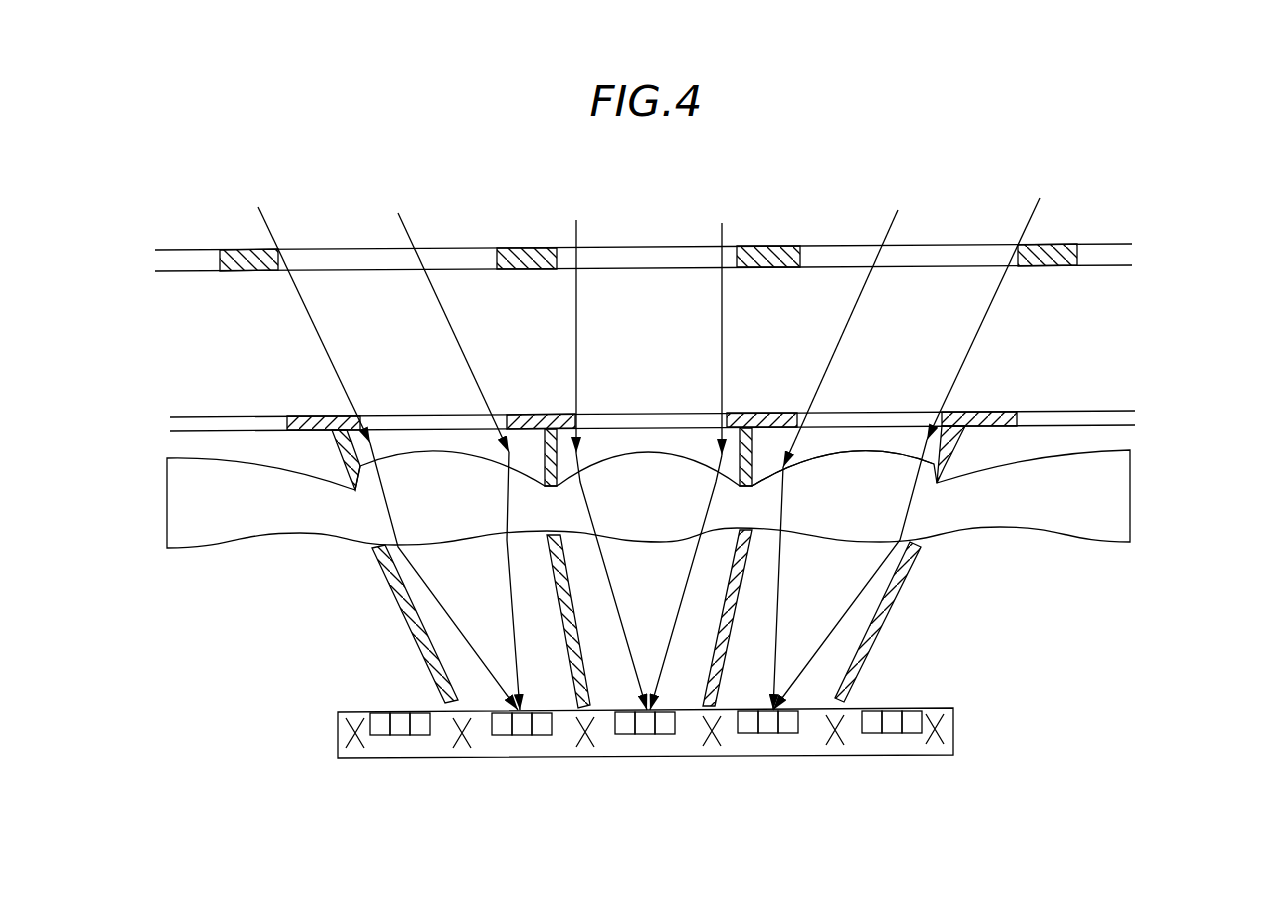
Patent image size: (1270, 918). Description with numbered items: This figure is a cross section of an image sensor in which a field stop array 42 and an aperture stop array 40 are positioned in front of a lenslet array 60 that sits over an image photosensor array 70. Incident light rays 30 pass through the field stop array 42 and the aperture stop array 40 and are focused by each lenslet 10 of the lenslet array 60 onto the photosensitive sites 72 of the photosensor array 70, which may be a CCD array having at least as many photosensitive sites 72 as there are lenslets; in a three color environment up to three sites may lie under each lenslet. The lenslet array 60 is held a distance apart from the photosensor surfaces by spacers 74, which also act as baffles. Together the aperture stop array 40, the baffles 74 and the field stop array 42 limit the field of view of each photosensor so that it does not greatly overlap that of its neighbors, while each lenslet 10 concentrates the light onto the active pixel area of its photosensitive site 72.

The incident light rays 30 is at (350, 217).
The field stop array 42 is at (1073, 232).
The aperture stop array 40 is at (973, 413).
The lenslet 10 is at (857, 467).
The lenslet array 60 is at (1130, 518).
The spacers 74 is at (890, 608).
The image photosensor array 70 is at (907, 740).
The photosensitive sites 72 is at (773, 733).